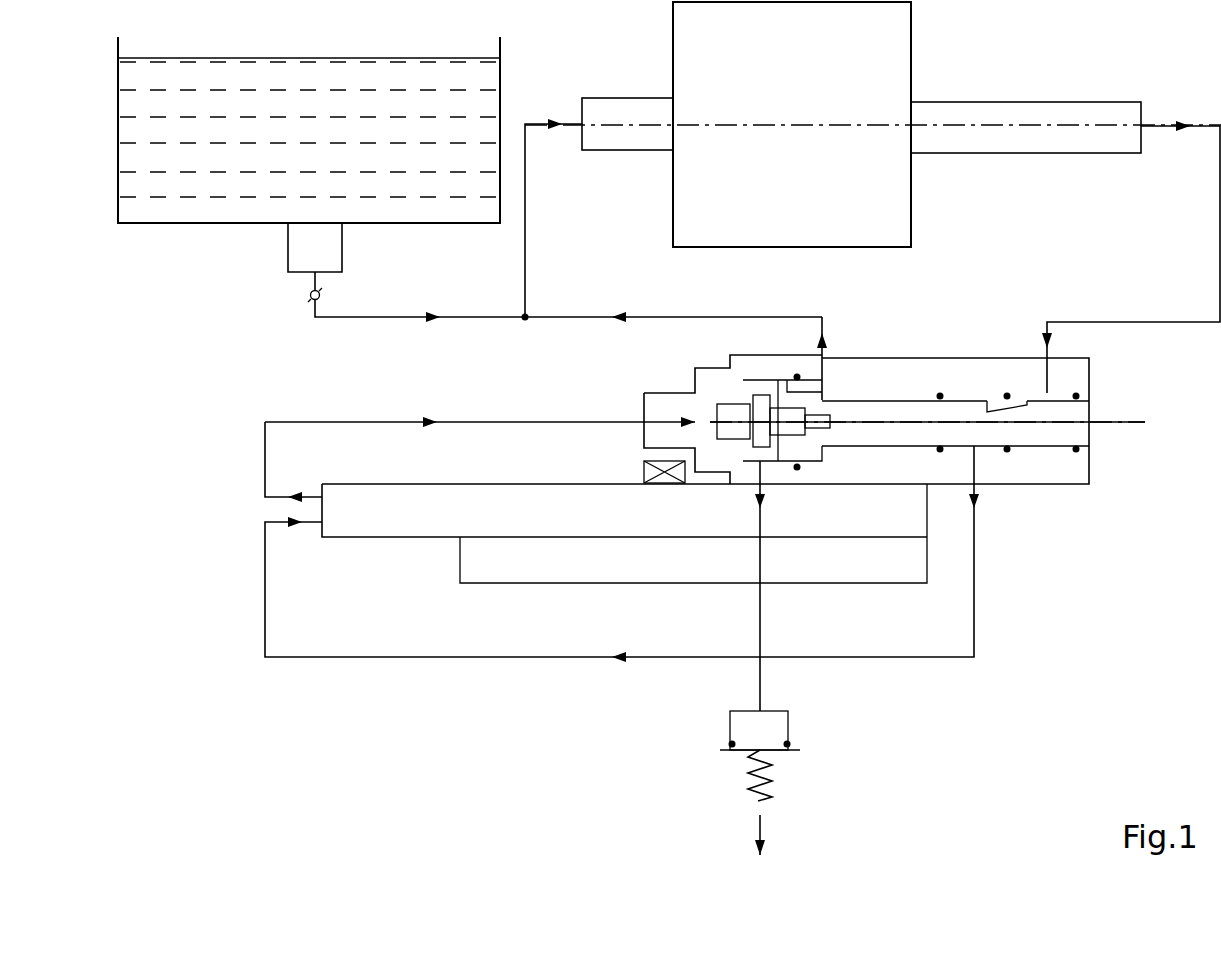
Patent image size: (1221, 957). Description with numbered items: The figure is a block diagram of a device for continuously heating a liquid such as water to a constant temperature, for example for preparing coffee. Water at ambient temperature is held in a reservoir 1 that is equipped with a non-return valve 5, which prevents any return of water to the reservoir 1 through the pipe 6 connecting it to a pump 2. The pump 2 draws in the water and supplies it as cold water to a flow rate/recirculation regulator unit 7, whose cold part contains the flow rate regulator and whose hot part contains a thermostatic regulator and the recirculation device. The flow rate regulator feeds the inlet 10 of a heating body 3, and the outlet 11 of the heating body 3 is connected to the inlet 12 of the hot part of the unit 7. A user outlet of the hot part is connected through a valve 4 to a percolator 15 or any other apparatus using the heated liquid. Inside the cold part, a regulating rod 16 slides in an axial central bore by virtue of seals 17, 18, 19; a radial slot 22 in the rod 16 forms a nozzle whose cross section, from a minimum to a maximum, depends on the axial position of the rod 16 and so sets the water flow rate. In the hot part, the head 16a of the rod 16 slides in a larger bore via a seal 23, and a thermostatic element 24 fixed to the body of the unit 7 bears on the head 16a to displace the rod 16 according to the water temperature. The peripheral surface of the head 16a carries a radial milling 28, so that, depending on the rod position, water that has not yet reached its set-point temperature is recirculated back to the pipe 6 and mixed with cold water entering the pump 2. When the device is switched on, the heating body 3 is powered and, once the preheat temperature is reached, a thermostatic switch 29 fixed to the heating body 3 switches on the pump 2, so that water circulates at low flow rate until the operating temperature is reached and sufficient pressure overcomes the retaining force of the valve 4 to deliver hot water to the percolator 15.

The reservoir 1 is at (309, 130).
The pump 2 is at (873, 124).
The heating body 3 is at (624, 510).
The valve 4 is at (770, 732).
The non-return valve 5 is at (322, 295).
The pipe 6 is at (505, 317).
The flow rate/recirculation regulator unit 7 is at (1072, 368).
The inlet of the heating body 10 is at (312, 524).
The outlet of the heating body 11 is at (313, 497).
The inlet of the hot part 12 is at (658, 424).
The percolator 15 is at (775, 838).
The regulating rod 16 is at (1072, 413).
The head of the rod 16a is at (783, 398).
The seal 17 is at (938, 452).
The seal 18 is at (1011, 452).
The seal 19 is at (1078, 452).
The radial slot 22 is at (991, 400).
The seal 23 is at (803, 467).
The thermostatic element 24 is at (743, 434).
The radial milling 28 is at (815, 385).
The thermostatic switch 29 is at (644, 466).